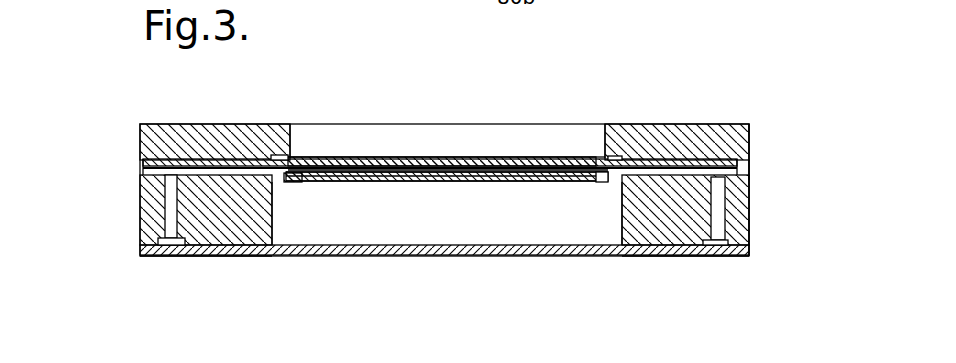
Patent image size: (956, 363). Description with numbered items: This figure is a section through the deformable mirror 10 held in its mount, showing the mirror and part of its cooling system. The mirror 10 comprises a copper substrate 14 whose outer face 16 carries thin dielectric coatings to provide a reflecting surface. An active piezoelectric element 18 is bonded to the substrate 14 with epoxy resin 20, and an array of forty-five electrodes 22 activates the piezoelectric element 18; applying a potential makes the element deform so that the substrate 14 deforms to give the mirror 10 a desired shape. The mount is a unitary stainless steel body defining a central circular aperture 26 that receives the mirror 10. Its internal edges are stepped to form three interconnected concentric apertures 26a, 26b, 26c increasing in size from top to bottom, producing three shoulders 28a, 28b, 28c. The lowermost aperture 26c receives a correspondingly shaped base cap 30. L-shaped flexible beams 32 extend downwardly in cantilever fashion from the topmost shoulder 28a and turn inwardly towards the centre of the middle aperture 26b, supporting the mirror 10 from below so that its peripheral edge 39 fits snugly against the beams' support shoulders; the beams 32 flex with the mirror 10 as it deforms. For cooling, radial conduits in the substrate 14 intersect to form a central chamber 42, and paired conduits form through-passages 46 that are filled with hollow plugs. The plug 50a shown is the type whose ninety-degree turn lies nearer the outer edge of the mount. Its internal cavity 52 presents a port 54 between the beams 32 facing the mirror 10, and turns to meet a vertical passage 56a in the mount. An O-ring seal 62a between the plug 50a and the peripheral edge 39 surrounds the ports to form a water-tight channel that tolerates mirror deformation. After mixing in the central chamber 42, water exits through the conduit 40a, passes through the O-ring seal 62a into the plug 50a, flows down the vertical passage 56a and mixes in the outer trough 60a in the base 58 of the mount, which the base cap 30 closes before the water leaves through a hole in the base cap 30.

The deformable mirror 10 is at (499, 142).
The copper substrate 14 is at (530, 163).
The outer face 16 is at (457, 159).
The active piezoelectric element 18 is at (520, 183).
The epoxy resin 20 is at (540, 183).
The electrodes 22 is at (486, 185).
The central circular aperture 26 is at (355, 122).
The topmost aperture 26a is at (360, 151).
The middle aperture 26b is at (418, 216).
The lowermost aperture 26c is at (153, 256).
The topmost shoulder 28a is at (603, 157).
The middle shoulder 28b is at (618, 257).
The lowermost shoulder 28c is at (735, 257).
The base cap 30 is at (468, 255).
The flexible beam 32 is at (596, 185).
The peripheral edge 39 is at (584, 160).
The conduit 40a is at (352, 183).
The central chamber 42 is at (426, 164).
The through-passage 46 is at (752, 170).
The plug 50a is at (143, 170).
The internal cavity 52 is at (209, 172).
The port 54 is at (297, 183).
The vertical passage 56a is at (171, 213).
The base 58 is at (138, 265).
The outer trough 60a is at (180, 246).
The O-ring seal 62a is at (291, 157).